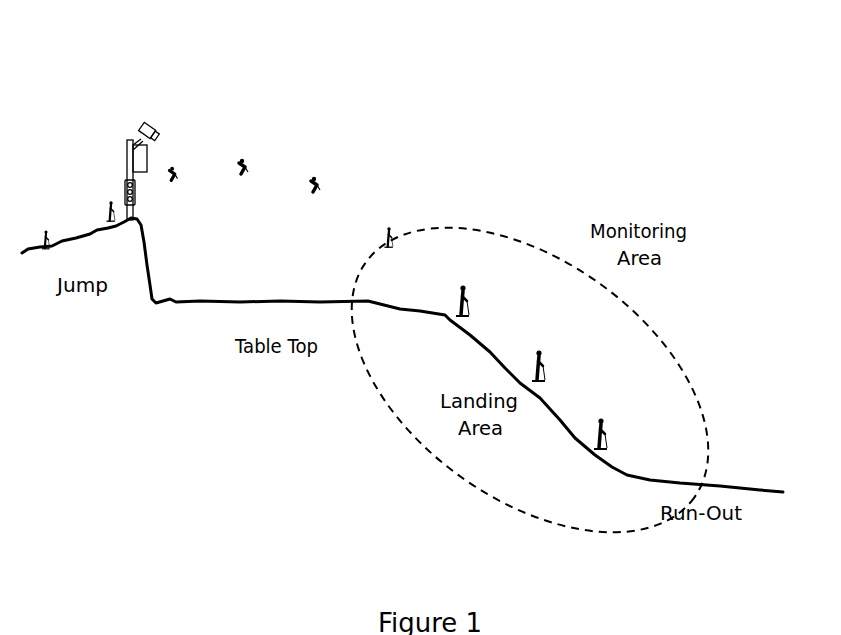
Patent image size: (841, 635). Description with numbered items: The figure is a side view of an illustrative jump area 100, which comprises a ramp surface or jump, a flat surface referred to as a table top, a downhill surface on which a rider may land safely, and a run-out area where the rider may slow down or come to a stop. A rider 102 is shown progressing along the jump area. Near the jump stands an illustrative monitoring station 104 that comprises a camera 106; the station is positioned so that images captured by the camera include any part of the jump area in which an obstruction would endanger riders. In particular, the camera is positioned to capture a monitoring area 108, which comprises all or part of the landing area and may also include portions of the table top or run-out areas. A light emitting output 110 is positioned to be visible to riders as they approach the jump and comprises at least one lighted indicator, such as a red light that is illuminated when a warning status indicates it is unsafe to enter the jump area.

The jump area 100 is at (126, 58).
The rider 102 is at (245, 160).
The monitoring station 104 is at (128, 155).
The camera 106 is at (150, 128).
The monitoring area 108 is at (452, 227).
The light emitting output 110 is at (125, 197).